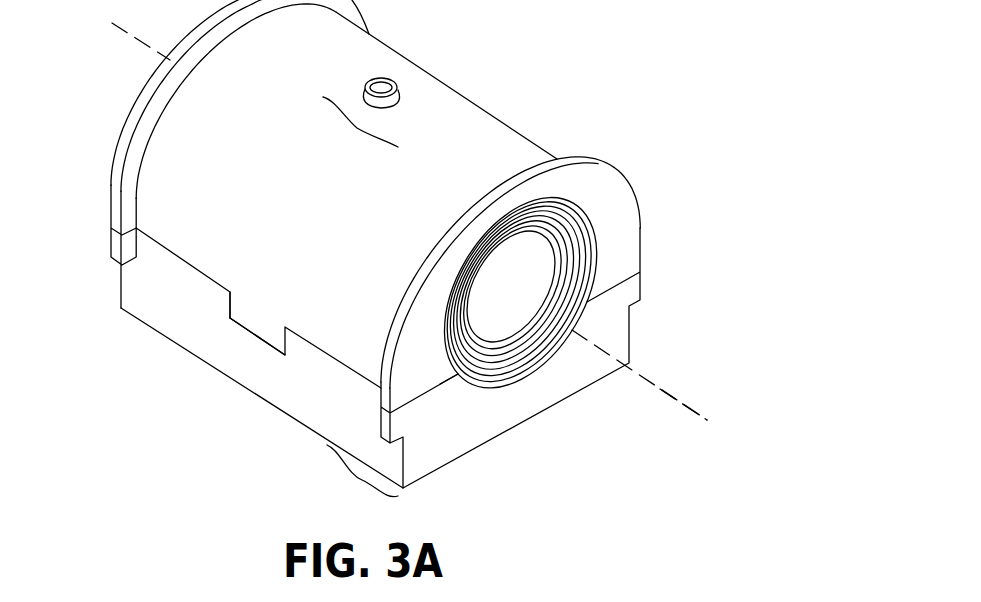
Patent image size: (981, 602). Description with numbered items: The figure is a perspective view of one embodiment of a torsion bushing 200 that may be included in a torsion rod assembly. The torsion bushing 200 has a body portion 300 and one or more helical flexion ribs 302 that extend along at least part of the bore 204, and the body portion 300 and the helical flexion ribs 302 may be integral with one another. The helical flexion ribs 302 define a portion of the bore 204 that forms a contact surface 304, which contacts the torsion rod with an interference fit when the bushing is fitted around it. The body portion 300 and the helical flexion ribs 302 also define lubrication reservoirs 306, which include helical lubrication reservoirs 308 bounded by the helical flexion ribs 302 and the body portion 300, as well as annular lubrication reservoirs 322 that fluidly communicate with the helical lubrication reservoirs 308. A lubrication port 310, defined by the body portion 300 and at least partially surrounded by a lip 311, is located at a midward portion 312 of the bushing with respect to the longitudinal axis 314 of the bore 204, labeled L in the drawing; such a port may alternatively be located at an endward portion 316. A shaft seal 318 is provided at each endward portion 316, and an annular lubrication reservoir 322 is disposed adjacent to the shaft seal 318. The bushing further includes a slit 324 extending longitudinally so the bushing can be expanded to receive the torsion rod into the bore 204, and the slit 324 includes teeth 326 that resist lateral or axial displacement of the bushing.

The torsion bushing 200 is at (580, 40).
The bore 204 is at (479, 338).
The body portion 300 is at (449, 444).
The helical flexion ribs 302 is at (560, 255).
The contact surface 304 is at (551, 282).
The lubrication reservoirs 306 is at (569, 306).
The helical lubrication reservoirs 308 is at (506, 340).
The lubrication port 310 is at (381, 83).
The lip 311 is at (400, 98).
The midward portion 312 is at (357, 128).
The longitudinal axis 314 is at (701, 413).
The endward portion 316 is at (362, 481).
The shaft seal 318 is at (594, 214).
The annular lubrication reservoir 322 is at (512, 287).
The slit 324 is at (211, 294).
The teeth 326 is at (261, 340).
The axis L is at (701, 413).